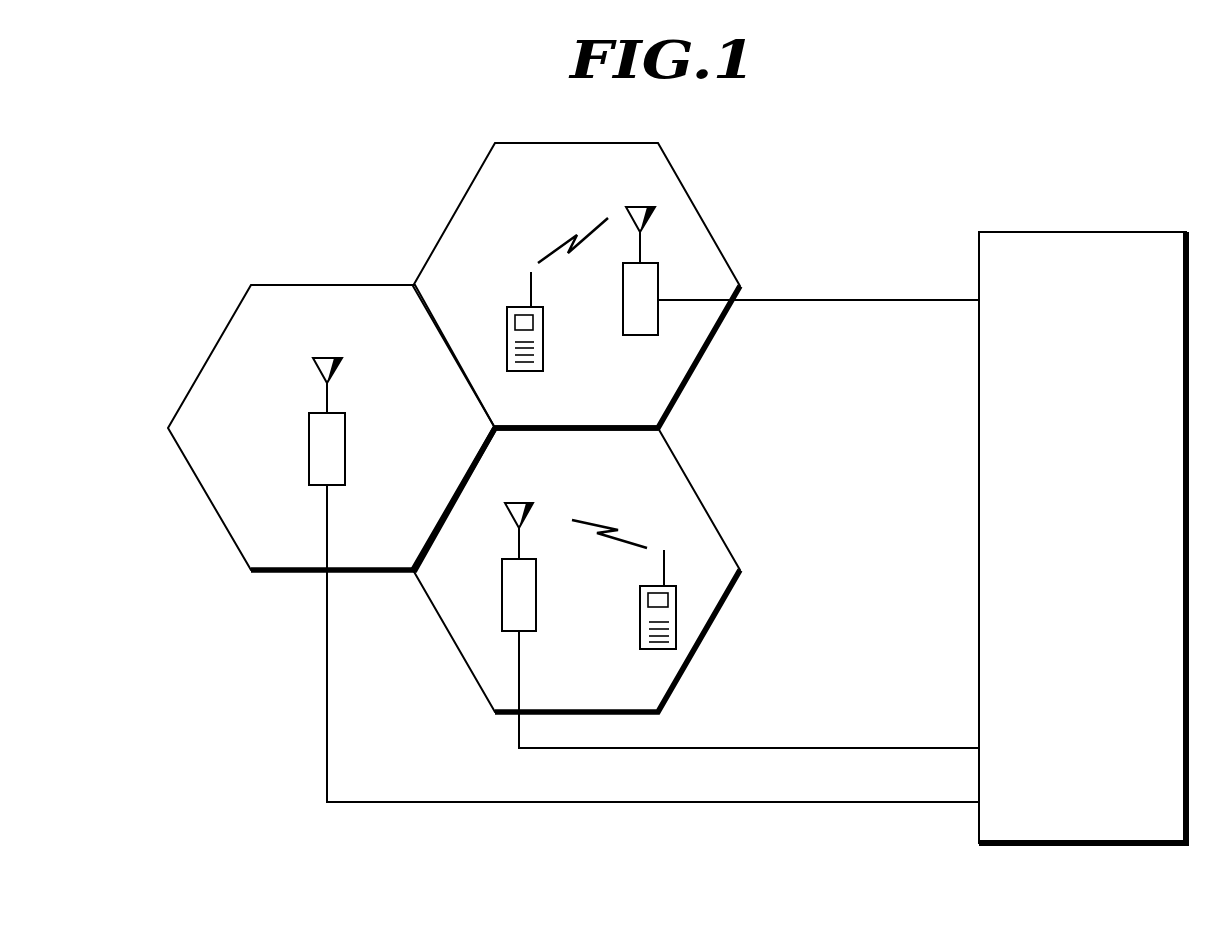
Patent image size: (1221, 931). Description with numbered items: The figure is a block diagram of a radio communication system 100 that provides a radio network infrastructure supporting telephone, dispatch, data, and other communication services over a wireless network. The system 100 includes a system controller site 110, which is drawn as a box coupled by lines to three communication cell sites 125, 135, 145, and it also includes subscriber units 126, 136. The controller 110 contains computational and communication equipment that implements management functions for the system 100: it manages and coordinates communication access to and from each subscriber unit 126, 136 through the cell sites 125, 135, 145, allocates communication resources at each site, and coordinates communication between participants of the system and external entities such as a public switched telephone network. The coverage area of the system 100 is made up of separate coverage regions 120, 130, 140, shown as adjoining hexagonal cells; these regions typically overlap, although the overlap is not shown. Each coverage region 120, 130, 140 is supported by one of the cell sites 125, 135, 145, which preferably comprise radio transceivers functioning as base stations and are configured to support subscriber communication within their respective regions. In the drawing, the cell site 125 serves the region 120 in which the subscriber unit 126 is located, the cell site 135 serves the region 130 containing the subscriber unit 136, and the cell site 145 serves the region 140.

The radio communication system 100 is at (675, 883).
The system controller site 110 is at (1103, 231).
The coverage region 120 is at (698, 205).
The communication cell site 125 is at (639, 336).
The subscriber unit 126 is at (507, 308).
The coverage region 130 is at (705, 503).
The communication cell site 135 is at (502, 594).
The subscriber unit 136 is at (640, 618).
The coverage region 140 is at (222, 325).
The communication cell site 145 is at (308, 457).